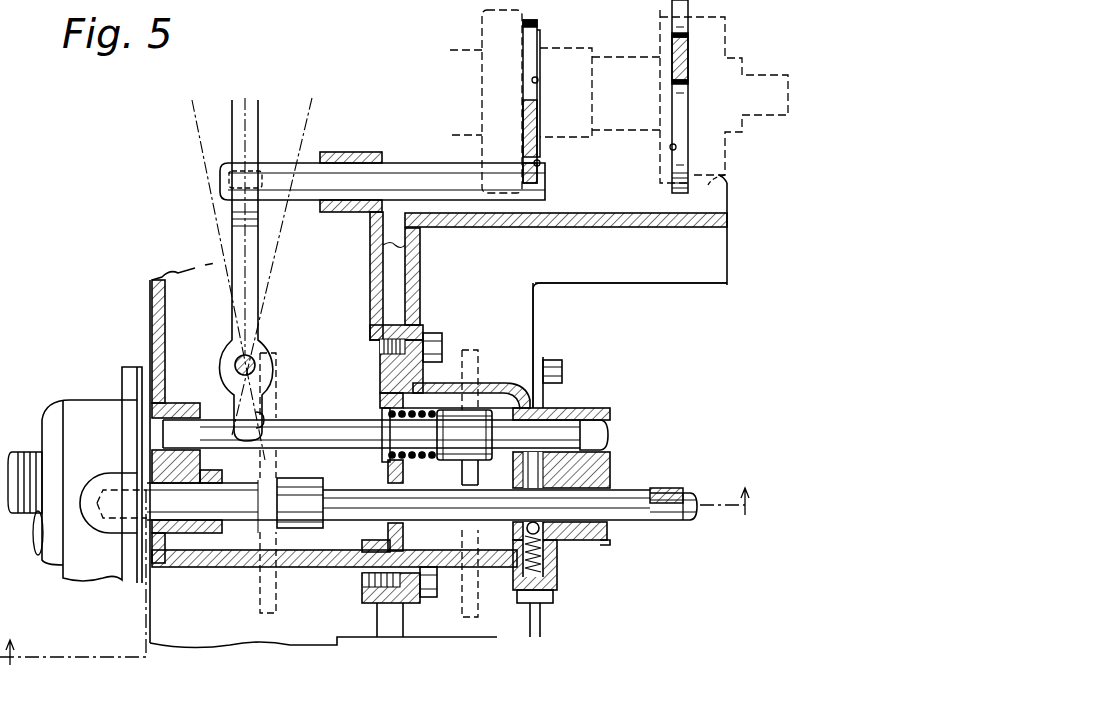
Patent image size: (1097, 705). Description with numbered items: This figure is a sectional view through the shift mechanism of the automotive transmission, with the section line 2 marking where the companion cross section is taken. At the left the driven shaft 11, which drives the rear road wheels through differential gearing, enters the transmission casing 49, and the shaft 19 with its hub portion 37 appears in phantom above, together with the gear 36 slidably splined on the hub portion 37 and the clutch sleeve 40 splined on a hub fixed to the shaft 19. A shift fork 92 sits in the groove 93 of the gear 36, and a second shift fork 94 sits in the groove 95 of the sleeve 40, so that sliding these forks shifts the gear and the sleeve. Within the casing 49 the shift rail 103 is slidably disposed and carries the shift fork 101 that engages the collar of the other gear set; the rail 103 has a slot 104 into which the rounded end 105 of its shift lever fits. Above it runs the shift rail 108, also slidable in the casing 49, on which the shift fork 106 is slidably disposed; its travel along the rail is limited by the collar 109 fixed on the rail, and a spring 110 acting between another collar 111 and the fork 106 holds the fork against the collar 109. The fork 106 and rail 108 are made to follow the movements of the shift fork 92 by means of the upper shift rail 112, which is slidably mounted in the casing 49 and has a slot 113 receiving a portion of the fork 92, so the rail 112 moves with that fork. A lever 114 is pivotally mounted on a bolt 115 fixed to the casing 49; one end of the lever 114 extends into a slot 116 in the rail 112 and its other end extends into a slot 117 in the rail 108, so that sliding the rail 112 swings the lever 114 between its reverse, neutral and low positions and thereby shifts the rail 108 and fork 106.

The section line 2- 2 is at (374, 592).
The driven shaft 11 is at (20, 452).
The shaft 19 is at (462, 52).
The gear 36 is at (482, 18).
The hub portion 37 is at (583, 50).
The sleeve 40 is at (708, 185).
The transmission casing 49 is at (550, 283).
The shift fork 92 is at (530, 22).
The groove 93 is at (540, 82).
The shift fork 94 is at (689, 46).
The groove 95 is at (670, 147).
The shift fork 101 is at (270, 463).
The shift rail 103 is at (632, 522).
The slot 104 is at (674, 505).
The rounded end 105 is at (663, 488).
The shift fork 106 is at (470, 532).
The shift rail 108 is at (563, 413).
The collar 109 is at (482, 410).
The spring 110 is at (416, 458).
The collar 111 is at (382, 414).
The shift rail 112 is at (410, 174).
The slot 113 is at (540, 164).
The lever 114 is at (262, 270).
The bolt 115 is at (253, 360).
The slot 116 is at (228, 185).
The slot 117 is at (262, 422).